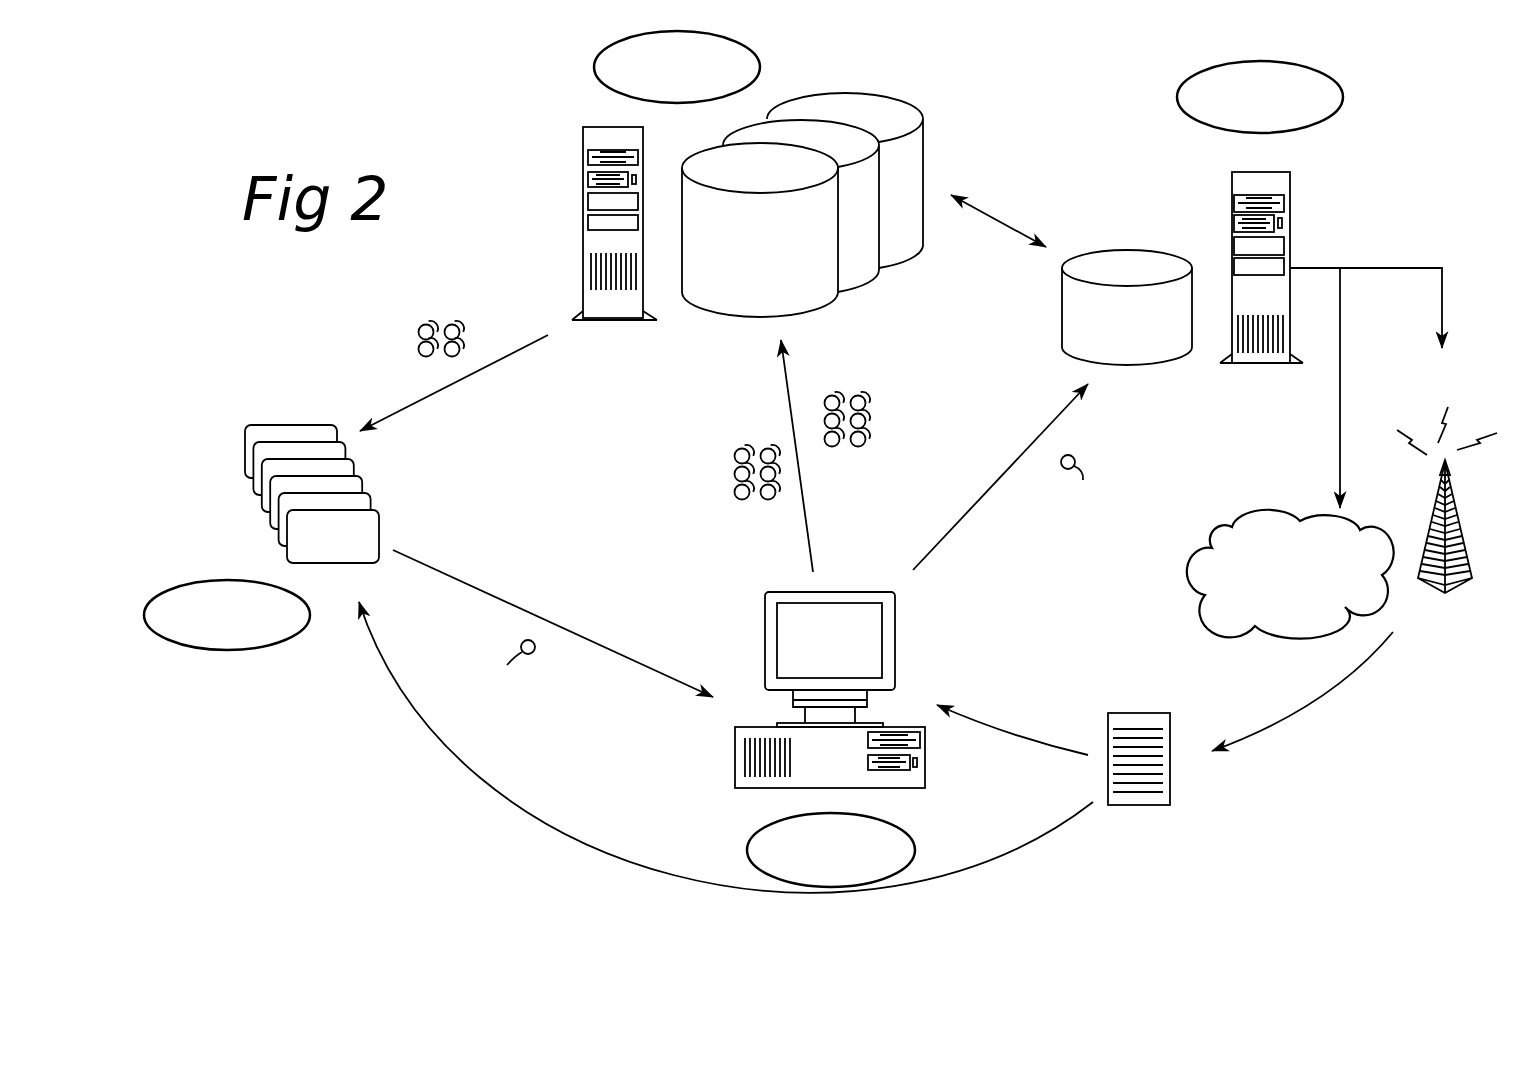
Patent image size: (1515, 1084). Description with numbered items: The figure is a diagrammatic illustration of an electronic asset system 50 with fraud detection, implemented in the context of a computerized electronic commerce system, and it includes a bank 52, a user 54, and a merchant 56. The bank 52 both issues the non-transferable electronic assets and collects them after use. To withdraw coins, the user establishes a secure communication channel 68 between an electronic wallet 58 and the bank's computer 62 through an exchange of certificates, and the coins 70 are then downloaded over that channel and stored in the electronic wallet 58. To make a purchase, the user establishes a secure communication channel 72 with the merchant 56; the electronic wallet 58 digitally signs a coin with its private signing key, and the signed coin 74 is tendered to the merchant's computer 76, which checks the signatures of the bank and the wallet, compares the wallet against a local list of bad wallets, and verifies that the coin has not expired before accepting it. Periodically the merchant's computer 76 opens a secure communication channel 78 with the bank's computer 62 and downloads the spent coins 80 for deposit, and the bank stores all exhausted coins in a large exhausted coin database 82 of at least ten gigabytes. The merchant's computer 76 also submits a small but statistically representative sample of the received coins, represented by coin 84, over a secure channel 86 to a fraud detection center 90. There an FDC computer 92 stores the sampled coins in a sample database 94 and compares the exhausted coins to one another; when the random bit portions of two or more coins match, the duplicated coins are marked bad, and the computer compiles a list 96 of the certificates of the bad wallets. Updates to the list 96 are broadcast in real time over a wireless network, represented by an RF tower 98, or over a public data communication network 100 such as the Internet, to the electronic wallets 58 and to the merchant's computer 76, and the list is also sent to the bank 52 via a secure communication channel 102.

The electronic asset system 50 is at (1058, 96).
The bank 52 is at (620, 85).
The user 54 is at (243, 642).
The merchant 56 is at (760, 848).
The electronic wallet 58 is at (371, 527).
The bank's computer 62 is at (592, 255).
The secure communication channel 68 is at (445, 390).
The coins 70 is at (413, 332).
The secure communication channel 72 is at (500, 597).
The signed coin 74 is at (504, 662).
The merchant's computer 76 is at (892, 662).
The secure communication channel 78 is at (792, 403).
The spent coins 80 is at (735, 478).
The exhausted coin database 82 is at (820, 297).
The sampled coin 84 is at (1082, 486).
The secure channel 86 is at (987, 493).
The fraud detection center 90 is at (1288, 67).
The FDC computer 92 is at (1273, 177).
The sample database 94 is at (1135, 257).
The list of bad wallets 96 is at (1128, 720).
The RF tower 98 is at (1460, 582).
The public data communication network 100 is at (1233, 535).
The secure communication channel 102 is at (983, 210).